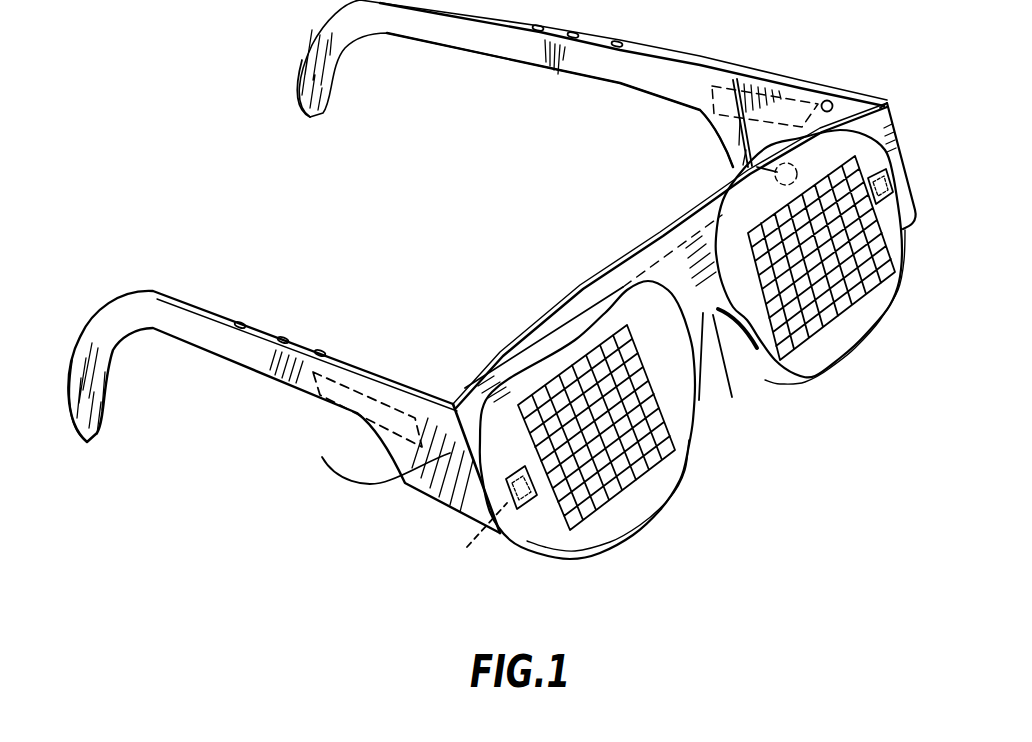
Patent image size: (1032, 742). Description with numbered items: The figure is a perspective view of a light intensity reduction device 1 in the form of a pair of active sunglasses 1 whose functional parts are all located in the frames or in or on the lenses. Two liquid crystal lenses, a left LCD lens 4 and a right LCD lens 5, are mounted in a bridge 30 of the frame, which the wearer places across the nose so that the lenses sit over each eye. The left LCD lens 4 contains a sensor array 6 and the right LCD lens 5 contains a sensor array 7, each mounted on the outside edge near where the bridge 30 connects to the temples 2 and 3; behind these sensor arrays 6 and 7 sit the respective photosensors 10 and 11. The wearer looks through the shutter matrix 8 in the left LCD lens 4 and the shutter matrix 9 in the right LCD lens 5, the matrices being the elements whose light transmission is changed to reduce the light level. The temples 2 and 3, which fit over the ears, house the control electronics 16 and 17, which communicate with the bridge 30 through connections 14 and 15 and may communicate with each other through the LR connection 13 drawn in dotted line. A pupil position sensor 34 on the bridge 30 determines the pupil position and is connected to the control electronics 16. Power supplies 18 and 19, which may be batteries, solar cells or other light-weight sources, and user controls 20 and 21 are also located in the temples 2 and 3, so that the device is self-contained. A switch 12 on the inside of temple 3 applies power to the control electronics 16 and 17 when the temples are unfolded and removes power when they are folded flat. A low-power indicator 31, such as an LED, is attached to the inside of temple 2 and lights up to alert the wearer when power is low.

The light intensity reduction device 1 is at (255, 53).
The temple 2 is at (714, 59).
The temple 3 is at (273, 360).
The left LCD lens 4 is at (806, 355).
The right LCD lens 5 is at (566, 359).
The sensor array 6 is at (895, 171).
The sensor array 7 is at (520, 510).
The shutter matrix 8 is at (895, 275).
The shutter matrix 9 is at (630, 492).
The photosensor 10 is at (903, 225).
The photosensor 11 is at (476, 538).
The switch 12 is at (453, 405).
The LR Connection 13 is at (667, 248).
The connection 14 is at (847, 100).
The connection 15 is at (371, 462).
The control electronics 16 is at (788, 72).
The control electronics 17 is at (327, 393).
The power supply 18 is at (307, 112).
The power supply 19 is at (95, 432).
The user controls 20 is at (615, 48).
The user controls 21 is at (322, 351).
The bridge 30 is at (728, 357).
The low-power indicator 31 is at (831, 101).
The pupil position sensor 34 is at (740, 165).